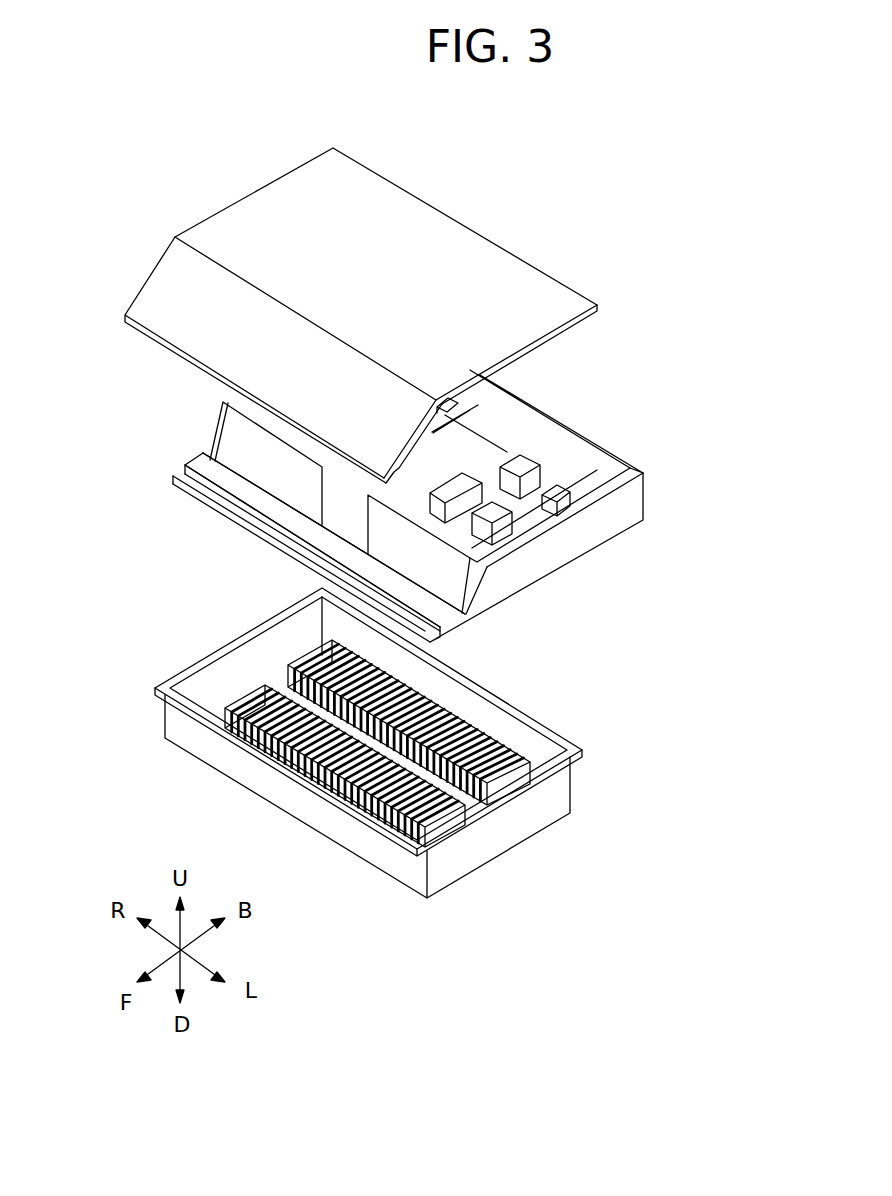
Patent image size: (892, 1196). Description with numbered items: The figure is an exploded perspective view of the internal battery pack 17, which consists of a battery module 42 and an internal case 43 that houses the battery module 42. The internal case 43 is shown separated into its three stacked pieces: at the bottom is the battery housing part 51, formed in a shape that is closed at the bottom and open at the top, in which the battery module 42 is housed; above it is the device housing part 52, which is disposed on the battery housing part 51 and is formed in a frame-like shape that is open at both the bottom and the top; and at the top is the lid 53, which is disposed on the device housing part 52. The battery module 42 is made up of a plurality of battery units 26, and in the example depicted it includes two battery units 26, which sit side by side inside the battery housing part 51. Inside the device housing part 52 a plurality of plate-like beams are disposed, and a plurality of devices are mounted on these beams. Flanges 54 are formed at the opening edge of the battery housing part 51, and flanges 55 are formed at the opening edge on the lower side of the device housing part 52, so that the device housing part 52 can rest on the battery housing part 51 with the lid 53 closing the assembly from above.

The internal battery pack 17 is at (528, 244).
The battery unit 26 is at (313, 653).
The battery module 42 is at (117, 600).
The internal case 43 is at (744, 298).
The battery housing part 51 is at (550, 802).
The device housing part 52 is at (628, 492).
The lid 53 is at (548, 302).
The flange 54 is at (500, 708).
The flange 55 is at (650, 518).